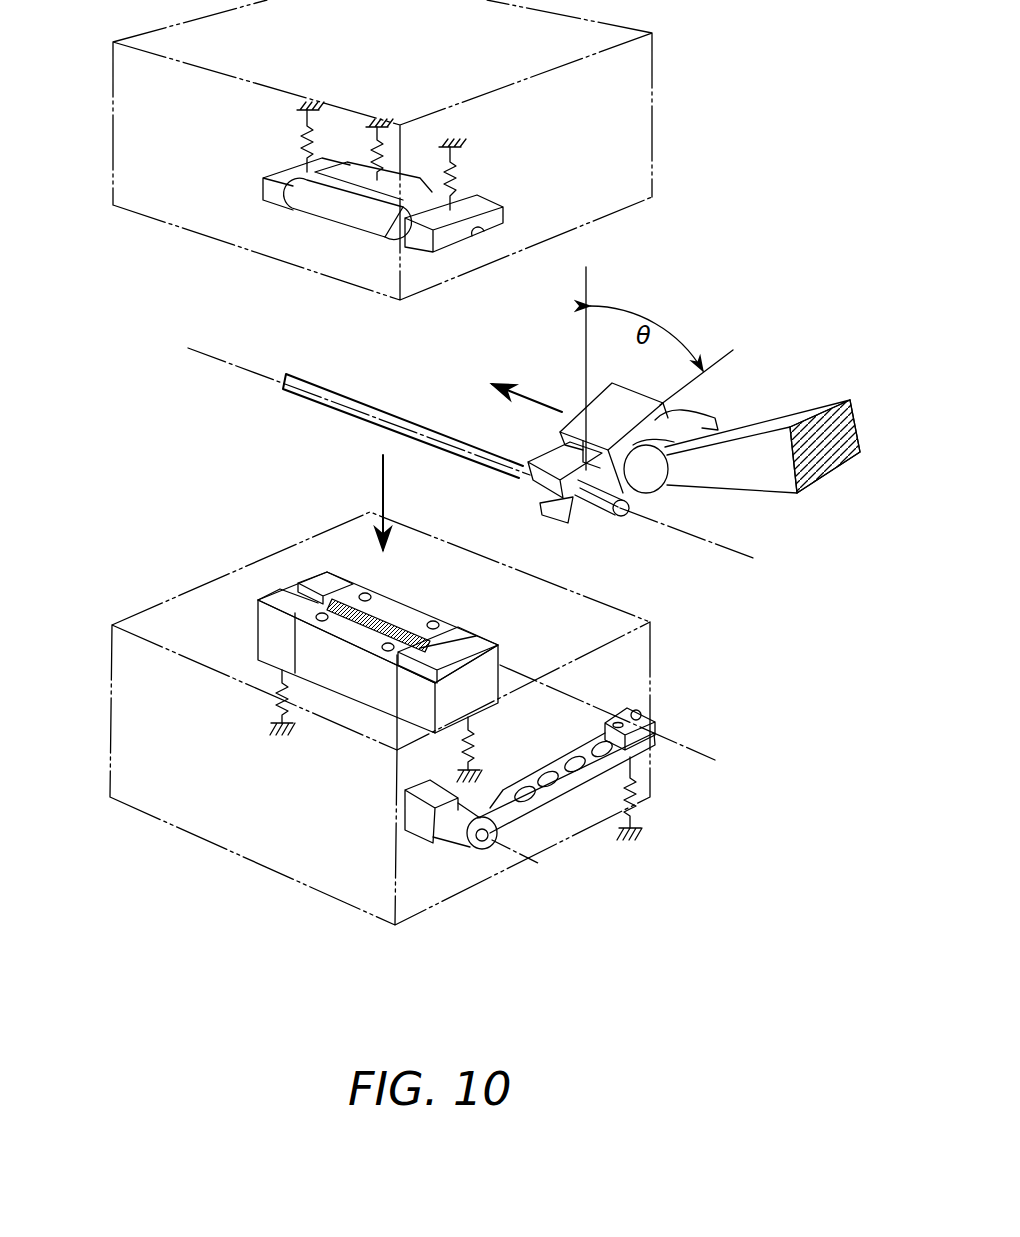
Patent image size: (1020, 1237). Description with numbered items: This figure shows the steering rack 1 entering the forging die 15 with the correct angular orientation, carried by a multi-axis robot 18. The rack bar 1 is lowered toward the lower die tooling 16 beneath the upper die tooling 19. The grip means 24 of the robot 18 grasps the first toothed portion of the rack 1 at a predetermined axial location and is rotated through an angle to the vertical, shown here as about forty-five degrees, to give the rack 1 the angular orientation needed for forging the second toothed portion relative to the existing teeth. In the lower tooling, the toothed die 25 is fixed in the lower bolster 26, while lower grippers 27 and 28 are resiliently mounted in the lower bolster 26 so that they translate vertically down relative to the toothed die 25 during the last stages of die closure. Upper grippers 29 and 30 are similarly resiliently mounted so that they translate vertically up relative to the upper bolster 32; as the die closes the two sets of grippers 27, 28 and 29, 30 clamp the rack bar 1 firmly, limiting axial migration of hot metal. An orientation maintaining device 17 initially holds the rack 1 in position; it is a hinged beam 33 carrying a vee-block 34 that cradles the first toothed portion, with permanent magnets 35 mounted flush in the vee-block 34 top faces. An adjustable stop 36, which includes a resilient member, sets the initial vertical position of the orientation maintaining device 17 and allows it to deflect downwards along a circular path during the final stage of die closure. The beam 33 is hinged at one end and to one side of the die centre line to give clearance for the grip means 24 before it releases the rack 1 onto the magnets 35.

The rack 1 is at (425, 422).
The forging die 15 is at (118, 289).
The lower die tooling 16 is at (317, 563).
The orientation maintaining device 17 is at (676, 732).
The multi-axis robot 18 is at (782, 418).
The upper die tooling 19 is at (288, 227).
The grip means 24 is at (603, 403).
The toothed die 25 is at (377, 653).
The lower bolster 26 is at (165, 805).
The lower gripper 27 is at (273, 607).
The lower gripper 28 is at (413, 675).
The upper gripper 29 is at (285, 173).
The upper gripper 30 is at (478, 203).
The upper bolster 32 is at (637, 102).
The hinged beam 33 is at (538, 804).
The vee-block 34 is at (657, 718).
The permanent magnets 35 is at (645, 710).
The adjustable stop 36 is at (634, 797).